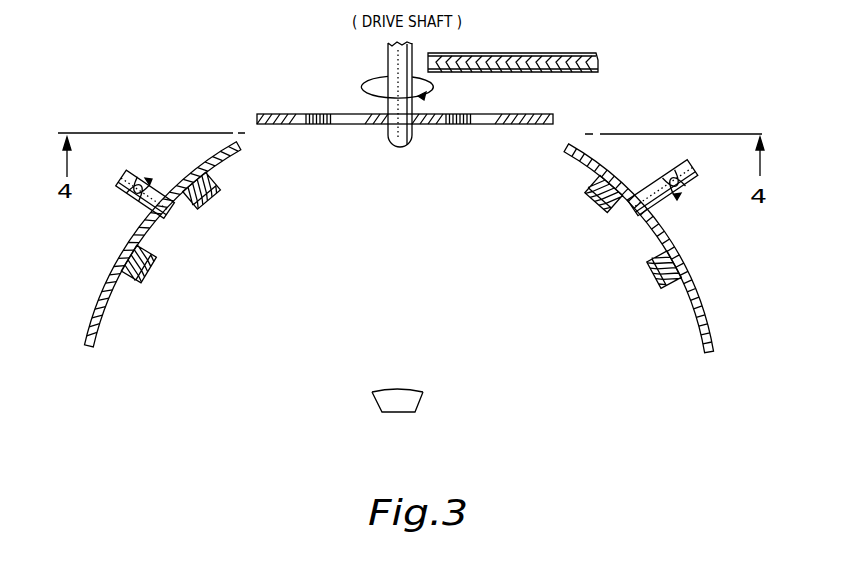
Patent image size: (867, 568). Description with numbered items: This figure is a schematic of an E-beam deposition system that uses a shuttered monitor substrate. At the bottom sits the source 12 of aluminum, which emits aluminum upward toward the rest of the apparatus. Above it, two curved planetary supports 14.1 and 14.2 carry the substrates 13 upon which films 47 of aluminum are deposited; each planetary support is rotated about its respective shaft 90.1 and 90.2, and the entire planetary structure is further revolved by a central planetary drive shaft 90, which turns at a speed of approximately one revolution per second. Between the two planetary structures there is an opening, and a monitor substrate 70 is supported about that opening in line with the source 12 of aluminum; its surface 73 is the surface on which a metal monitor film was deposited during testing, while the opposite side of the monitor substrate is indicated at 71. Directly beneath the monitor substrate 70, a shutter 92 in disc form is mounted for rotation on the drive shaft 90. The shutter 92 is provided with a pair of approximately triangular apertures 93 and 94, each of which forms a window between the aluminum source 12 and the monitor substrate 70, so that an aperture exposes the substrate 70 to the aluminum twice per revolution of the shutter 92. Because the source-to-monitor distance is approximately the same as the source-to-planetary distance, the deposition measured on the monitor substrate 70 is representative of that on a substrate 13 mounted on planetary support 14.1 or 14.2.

The source of aluminum 12 is at (424, 392).
The substrate 13 is at (221, 186).
The planetary support 14.1 is at (103, 333).
The planetary support 14.2 is at (712, 334).
The film of aluminum 47 is at (214, 204).
The monitor substrate 70 is at (545, 54).
The shutter bar lower surface 71 is at (599, 67).
The surface 73 is at (586, 54).
The planetary drive shaft 90 is at (388, 57).
The shaft 90.1 is at (133, 207).
The shaft 90.2 is at (670, 214).
The shutter 92 is at (300, 113).
The triangular aperture 93 is at (327, 125).
The triangular aperture 94 is at (462, 125).